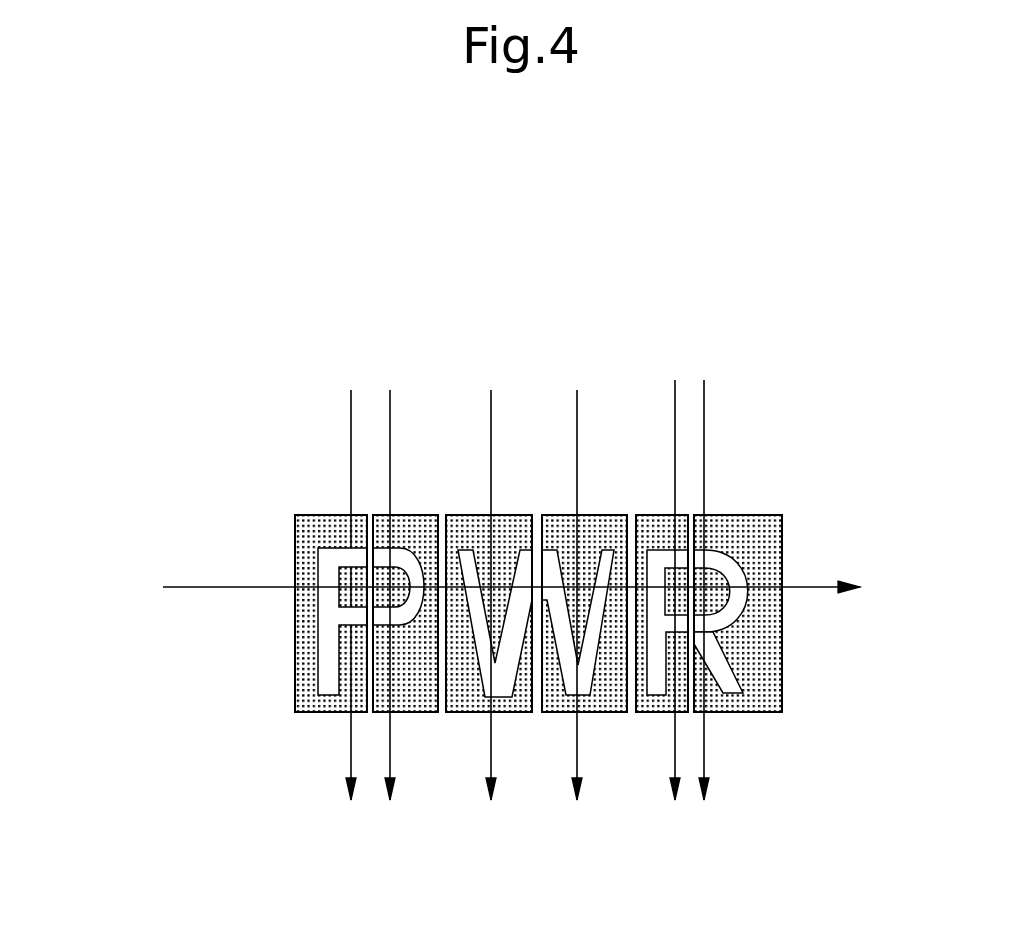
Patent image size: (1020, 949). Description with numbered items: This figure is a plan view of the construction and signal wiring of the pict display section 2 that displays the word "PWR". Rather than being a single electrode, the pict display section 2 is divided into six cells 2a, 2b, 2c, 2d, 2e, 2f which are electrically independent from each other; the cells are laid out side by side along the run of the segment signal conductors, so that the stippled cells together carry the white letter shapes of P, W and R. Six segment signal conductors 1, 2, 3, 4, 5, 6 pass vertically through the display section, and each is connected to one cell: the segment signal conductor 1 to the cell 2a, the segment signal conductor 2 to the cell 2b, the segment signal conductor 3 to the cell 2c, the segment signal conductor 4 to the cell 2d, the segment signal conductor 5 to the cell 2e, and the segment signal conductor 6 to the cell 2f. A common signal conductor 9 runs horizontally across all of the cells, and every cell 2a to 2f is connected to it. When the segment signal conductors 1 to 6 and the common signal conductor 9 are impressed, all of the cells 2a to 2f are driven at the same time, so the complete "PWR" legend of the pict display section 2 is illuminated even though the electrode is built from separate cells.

The segment signal conductor 1 is at (721, 356).
The pict display section 2 is at (786, 512).
The cell 2a is at (295, 515).
The cell 2b is at (408, 510).
The cell 2c is at (502, 513).
The cell 2d is at (595, 512).
The cell 2e is at (650, 713).
The cell 2f is at (764, 713).
The segment signal conductor 3 is at (390, 595).
The segment signal conductor 4 is at (491, 595).
The segment signal conductor 5 is at (577, 595).
The segment signal conductor 6 is at (689, 590).
The common signal conductor 9 is at (454, 590).